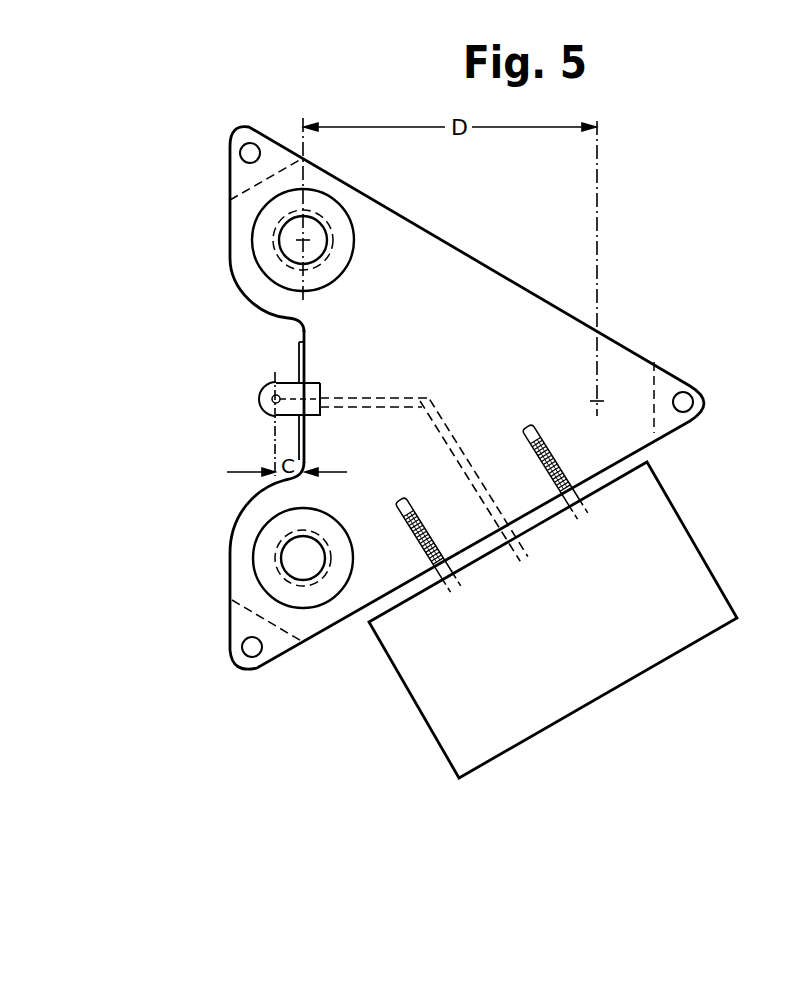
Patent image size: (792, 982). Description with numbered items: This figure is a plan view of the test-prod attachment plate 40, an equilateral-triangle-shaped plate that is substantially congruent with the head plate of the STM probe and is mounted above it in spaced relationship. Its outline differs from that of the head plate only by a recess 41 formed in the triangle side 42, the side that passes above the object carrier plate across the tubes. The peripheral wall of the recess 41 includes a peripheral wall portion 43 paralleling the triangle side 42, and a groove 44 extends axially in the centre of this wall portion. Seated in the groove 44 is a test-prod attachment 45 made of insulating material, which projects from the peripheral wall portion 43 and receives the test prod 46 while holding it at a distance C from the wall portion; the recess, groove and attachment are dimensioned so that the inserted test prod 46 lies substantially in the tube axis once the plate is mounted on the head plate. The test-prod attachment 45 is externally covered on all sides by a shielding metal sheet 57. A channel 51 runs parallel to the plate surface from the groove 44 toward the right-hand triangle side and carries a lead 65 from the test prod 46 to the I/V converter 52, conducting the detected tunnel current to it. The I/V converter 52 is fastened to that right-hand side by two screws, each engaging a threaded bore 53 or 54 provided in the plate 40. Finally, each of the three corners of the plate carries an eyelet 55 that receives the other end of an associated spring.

The test-prod attachment plate 40 is at (470, 278).
The recess 41 is at (288, 337).
The triangle side 42 is at (228, 570).
The peripheral wall portion 43 is at (300, 328).
The groove 44 is at (310, 384).
The test-prod attachment 45 is at (285, 377).
The test prod 46 is at (253, 400).
The channel 51 is at (423, 392).
The I/V converter 52 is at (685, 557).
The threaded bore 53 is at (537, 428).
The threaded bore 54 is at (400, 500).
The eyelet 55 is at (232, 145).
The shielding metal sheet 57 is at (263, 417).
The lead 65 is at (430, 402).